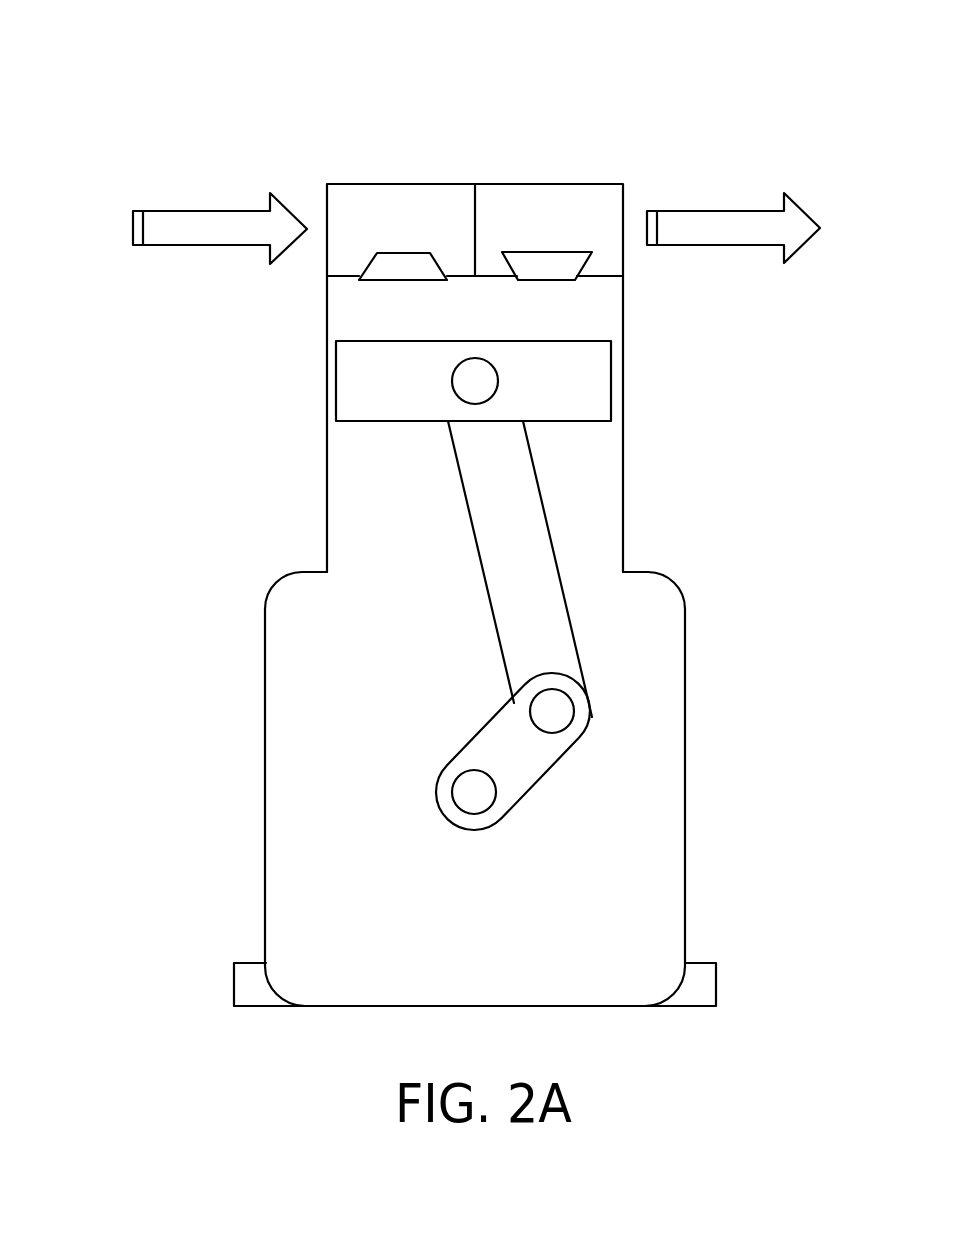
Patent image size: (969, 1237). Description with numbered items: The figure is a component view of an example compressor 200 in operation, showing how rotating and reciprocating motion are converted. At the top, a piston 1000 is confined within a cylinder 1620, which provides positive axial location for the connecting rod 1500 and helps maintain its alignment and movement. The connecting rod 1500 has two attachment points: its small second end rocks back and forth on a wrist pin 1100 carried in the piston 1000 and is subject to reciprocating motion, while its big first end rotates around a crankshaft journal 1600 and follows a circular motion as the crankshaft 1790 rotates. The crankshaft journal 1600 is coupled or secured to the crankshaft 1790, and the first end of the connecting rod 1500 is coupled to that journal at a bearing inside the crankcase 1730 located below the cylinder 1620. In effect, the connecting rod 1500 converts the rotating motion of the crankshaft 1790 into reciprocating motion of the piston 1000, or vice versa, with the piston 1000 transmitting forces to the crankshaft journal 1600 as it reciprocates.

The compressor 200 is at (227, 108).
The cylinder 1620 is at (323, 319).
The piston 1000 is at (390, 386).
The wrist pin 1100 is at (500, 393).
The connecting rod 1500 is at (478, 556).
The crankshaft journal 1600 is at (582, 712).
The crankshaft 1790 is at (542, 773).
The crankcase 1730 is at (263, 815).